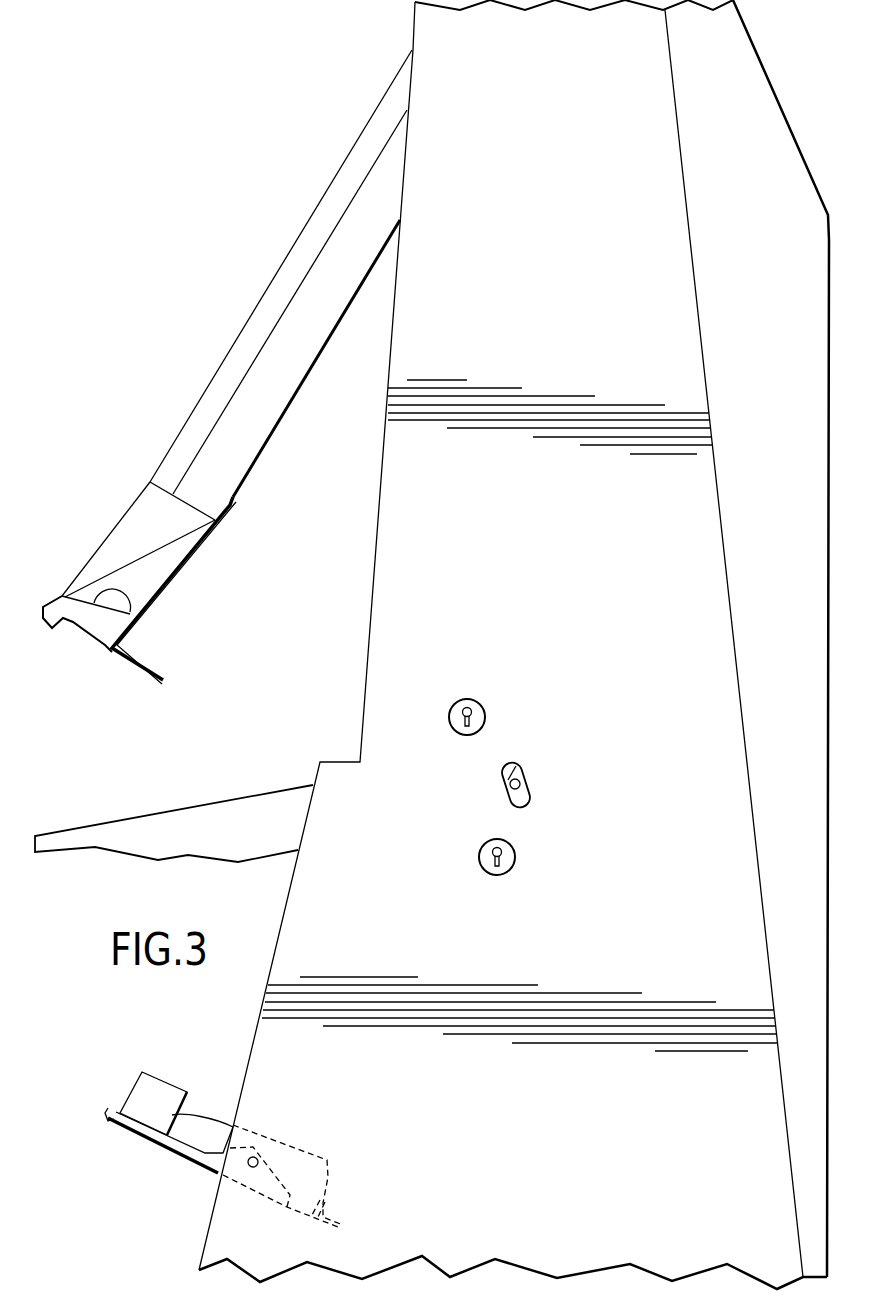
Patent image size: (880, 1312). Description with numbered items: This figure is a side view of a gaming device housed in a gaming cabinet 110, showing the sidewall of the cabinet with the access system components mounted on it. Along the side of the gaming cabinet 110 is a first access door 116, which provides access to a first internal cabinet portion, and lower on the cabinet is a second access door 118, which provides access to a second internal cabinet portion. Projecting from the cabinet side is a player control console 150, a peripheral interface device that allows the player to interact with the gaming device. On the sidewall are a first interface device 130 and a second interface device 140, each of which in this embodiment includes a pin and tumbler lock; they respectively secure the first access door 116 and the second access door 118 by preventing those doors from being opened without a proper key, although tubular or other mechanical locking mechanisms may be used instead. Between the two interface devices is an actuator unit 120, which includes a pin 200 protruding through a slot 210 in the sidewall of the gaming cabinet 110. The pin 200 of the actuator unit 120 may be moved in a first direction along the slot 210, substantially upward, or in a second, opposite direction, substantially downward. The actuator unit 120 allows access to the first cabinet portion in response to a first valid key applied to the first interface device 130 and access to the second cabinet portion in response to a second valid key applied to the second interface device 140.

The gaming cabinet 110 is at (413, 25).
The first access door 116 is at (282, 268).
The second access door 118 is at (165, 1080).
The actuator unit 120 is at (541, 797).
The first interface device 130 is at (478, 700).
The second interface device 140 is at (488, 875).
The player control console 150 is at (150, 815).
The pin 200 is at (503, 797).
The slot 210 is at (527, 762).